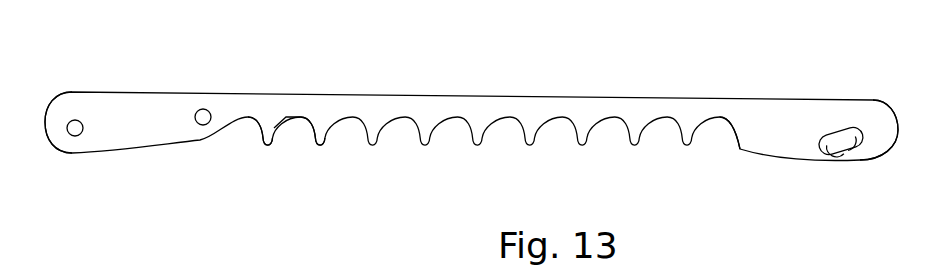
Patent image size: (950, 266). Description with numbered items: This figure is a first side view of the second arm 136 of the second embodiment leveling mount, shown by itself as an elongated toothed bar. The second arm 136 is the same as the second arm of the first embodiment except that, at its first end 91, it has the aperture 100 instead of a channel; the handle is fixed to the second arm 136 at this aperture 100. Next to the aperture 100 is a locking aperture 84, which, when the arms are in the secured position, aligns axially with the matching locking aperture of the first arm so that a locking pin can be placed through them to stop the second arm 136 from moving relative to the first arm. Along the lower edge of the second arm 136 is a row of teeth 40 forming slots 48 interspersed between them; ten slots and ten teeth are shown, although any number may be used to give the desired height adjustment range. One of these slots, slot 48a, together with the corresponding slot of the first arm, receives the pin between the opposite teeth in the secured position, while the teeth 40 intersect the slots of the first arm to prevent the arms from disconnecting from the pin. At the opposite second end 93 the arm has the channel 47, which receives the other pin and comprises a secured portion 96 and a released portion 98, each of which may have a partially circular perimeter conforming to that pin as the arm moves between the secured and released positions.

The second arm 136 is at (205, 72).
The first end 91 is at (50, 98).
The second end 93 is at (892, 102).
The aperture 100 is at (77, 128).
The locking aperture 84 is at (208, 108).
The slot 48a is at (307, 132).
The slots 48 is at (293, 137).
The teeth 40 is at (272, 138).
The channel 47 is at (833, 120).
The released portion 98 is at (830, 157).
The secured portion 96 is at (862, 145).